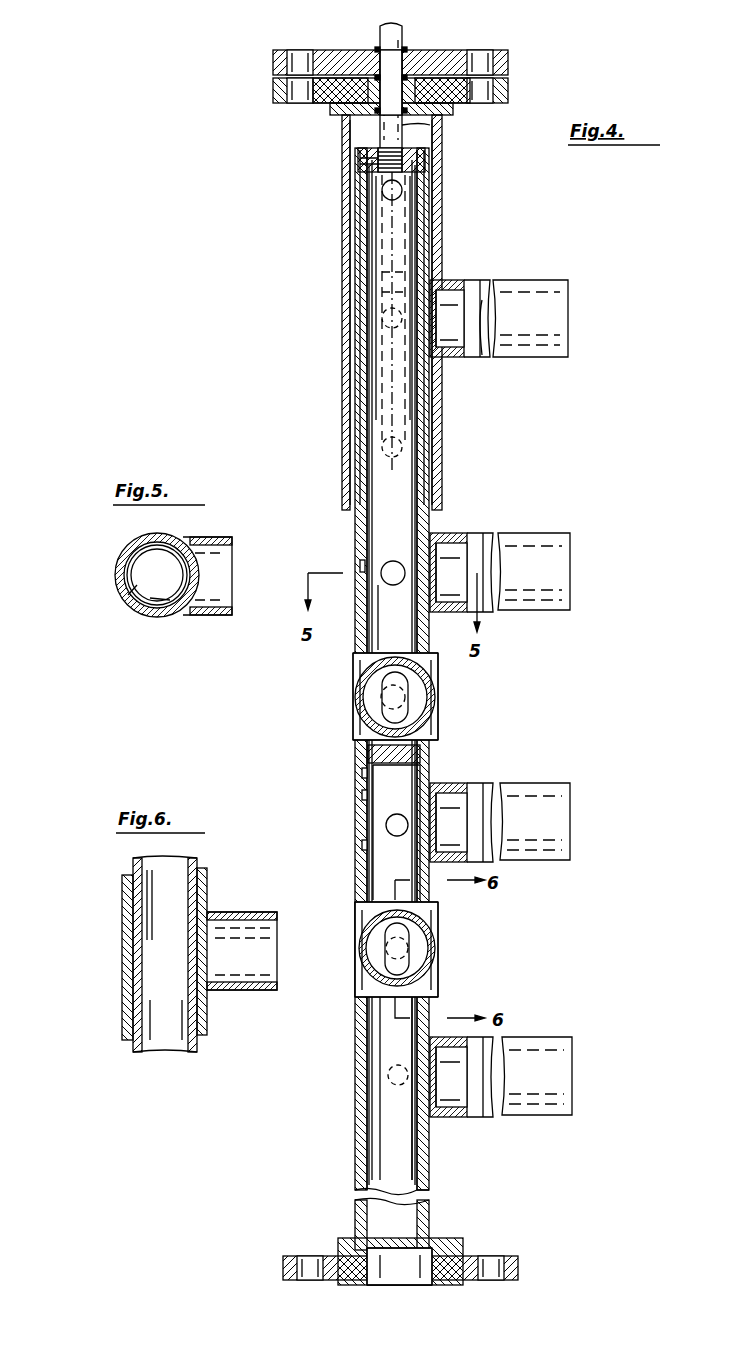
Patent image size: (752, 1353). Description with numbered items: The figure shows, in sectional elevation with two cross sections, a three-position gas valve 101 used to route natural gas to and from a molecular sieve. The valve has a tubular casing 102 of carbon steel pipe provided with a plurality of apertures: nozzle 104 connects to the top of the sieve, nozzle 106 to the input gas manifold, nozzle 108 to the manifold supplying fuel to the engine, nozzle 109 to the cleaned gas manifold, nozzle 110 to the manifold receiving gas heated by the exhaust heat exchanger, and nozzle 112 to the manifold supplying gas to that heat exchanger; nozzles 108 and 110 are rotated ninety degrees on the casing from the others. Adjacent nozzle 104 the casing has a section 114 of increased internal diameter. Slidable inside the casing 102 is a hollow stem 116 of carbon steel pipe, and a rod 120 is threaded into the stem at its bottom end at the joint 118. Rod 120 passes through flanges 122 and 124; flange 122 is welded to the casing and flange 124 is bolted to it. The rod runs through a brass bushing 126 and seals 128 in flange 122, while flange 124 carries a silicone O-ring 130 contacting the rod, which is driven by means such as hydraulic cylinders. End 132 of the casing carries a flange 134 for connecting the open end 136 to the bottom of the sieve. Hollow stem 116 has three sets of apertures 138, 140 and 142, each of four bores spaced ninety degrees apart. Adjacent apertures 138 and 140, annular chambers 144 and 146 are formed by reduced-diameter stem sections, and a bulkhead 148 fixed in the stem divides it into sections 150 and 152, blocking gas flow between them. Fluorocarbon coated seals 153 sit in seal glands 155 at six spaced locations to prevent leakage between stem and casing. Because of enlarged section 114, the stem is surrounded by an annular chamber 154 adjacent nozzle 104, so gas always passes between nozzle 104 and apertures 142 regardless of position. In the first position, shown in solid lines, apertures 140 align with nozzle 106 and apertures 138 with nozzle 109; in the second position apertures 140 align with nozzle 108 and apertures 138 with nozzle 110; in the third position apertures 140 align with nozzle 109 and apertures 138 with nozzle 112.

In FIG. 4, the sampler assembly 101 is at (573, 440).
In FIG. 4, the tubular casing 102 is at (355, 522).
In FIG. 5, the tubular casing 102 is at (128, 550).
In FIG. 6, the tubular casing 102 is at (122, 890).
In FIG. 4, the nozzle 104 is at (472, 300).
In FIG. 4, the nozzle 106 is at (476, 548).
In FIG. 5, the nozzle 106 is at (205, 545).
In FIG. 4, the nozzle 108 is at (432, 718).
In FIG. 4, the nozzle 109 is at (512, 795).
In FIG. 4, the nozzle 110 is at (432, 967).
In FIG. 6, the nozzle 110 is at (260, 912).
In FIG. 4, the nozzle 112 is at (480, 1117).
In FIG. 4, the section of increased internal diameter 114 is at (442, 430).
In FIG. 4, the hollow stem 116 is at (428, 392).
In FIG. 5, the hollow stem 116 is at (130, 603).
In FIG. 6, the hollow stem 116 is at (200, 860).
In FIG. 4, the piston cap 118 is at (362, 168).
In FIG. 4, the rod 120 is at (402, 40).
In FIG. 4, the flange 122 is at (330, 103).
In FIG. 4, the flange 124 is at (273, 62).
In FIG. 4, the brass bushing 126 is at (345, 118).
In FIG. 4, the seals 128 is at (432, 125).
In FIG. 4, the silicone O-ring 130 is at (376, 48).
In FIG. 4, the end of casing 132 is at (455, 1256).
In FIG. 4, the flange 134 is at (335, 1260).
In FIG. 4, the open end 136 is at (395, 1278).
In FIG. 4, the set of apertures 138 is at (385, 825).
In FIG. 4, the set of apertures 140 is at (385, 576).
In FIG. 5, the set of apertures 140 is at (132, 580).
In FIG. 4, the set of apertures 142 is at (395, 190).
In FIG. 4, the annular chamber 144 is at (365, 842).
In FIG. 4, the annular chamber 146 is at (360, 565).
In FIG. 5, the annular chamber 146 is at (158, 615).
In FIG. 4, the bulkhead 148 is at (420, 755).
In FIG. 4, the section 150 is at (378, 640).
In FIG. 4, the section 152 is at (385, 790).
In FIG. 4, the fluorocarbon coated seals 153 is at (362, 770).
In FIG. 4, the annular chamber 154 is at (425, 245).
In FIG. 4, the seal glands 155 is at (362, 782).